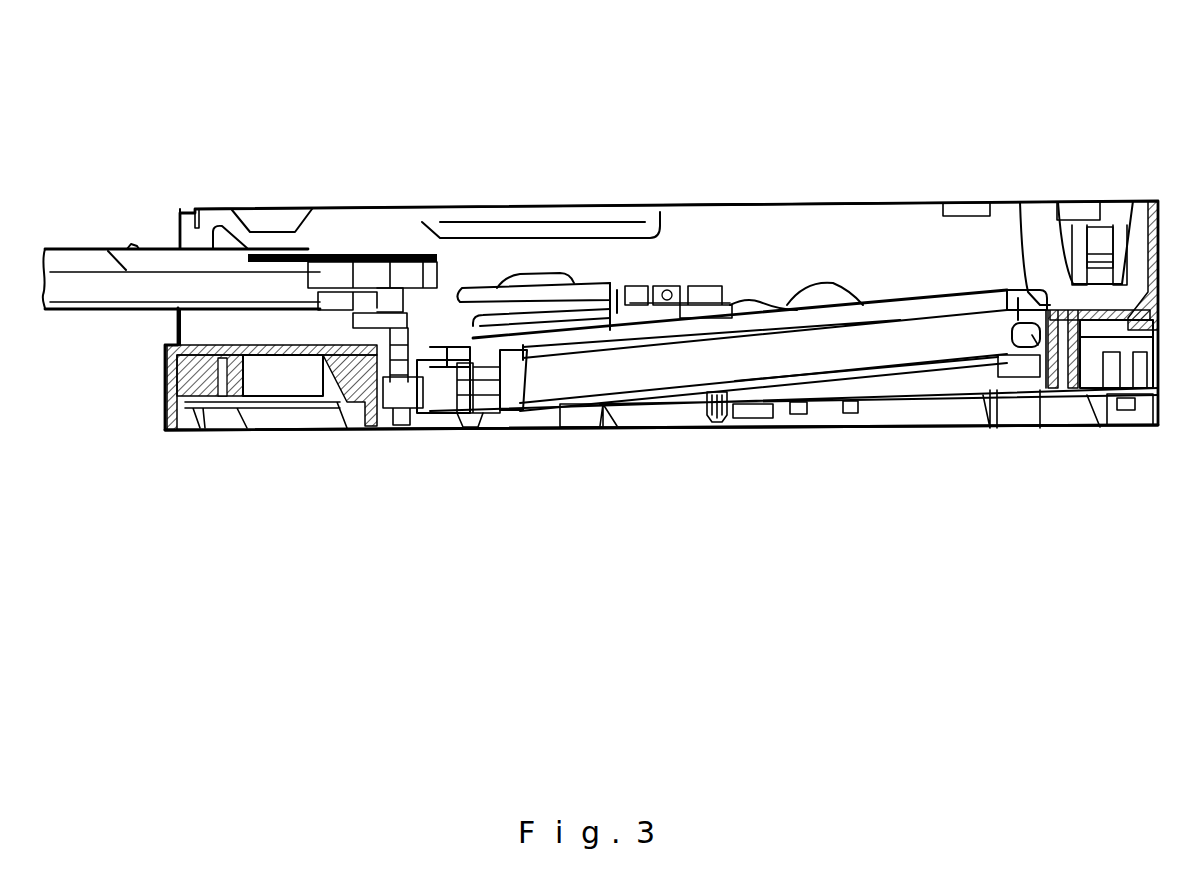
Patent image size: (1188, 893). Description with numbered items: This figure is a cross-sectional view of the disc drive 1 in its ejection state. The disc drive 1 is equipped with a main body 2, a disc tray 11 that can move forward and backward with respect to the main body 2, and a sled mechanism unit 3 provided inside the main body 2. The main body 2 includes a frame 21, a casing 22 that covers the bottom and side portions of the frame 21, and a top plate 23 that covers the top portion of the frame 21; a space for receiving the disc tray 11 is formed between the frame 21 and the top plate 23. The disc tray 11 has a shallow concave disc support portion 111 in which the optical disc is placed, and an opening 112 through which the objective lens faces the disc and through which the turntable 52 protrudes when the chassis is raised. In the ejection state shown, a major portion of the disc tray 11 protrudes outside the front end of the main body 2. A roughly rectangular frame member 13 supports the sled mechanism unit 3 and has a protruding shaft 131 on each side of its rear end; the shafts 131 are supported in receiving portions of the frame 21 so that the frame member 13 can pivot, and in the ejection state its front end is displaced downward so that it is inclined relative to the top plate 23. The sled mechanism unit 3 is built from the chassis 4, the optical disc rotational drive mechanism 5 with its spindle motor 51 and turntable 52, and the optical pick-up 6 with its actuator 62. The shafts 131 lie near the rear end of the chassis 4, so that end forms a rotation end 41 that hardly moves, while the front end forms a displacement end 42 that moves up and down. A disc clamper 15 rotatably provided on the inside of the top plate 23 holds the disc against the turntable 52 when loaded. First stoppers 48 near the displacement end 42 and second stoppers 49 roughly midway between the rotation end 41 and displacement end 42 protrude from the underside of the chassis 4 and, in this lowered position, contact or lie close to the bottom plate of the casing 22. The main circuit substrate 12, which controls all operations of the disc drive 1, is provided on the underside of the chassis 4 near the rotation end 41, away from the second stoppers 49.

The disc drive 1 is at (605, 124).
The main body 2 is at (352, 207).
The sled mechanism unit 3 is at (762, 283).
The chassis 4 is at (680, 393).
The optical disc rotational drive mechanism 5 is at (466, 288).
The optical pick-up 6 is at (684, 285).
The disc tray 11 is at (90, 311).
The main circuit substrate 12 is at (928, 430).
The frame member 13 is at (793, 353).
The disc clamper 15 is at (516, 238).
The frame 21 is at (338, 433).
The casing 22 is at (575, 432).
The top plate 23 is at (738, 210).
The rotation end 41 is at (987, 430).
The displacement end 42 is at (457, 432).
The first stoppers 48 is at (471, 433).
The second stoppers 49 is at (717, 424).
The spindle motor 51 is at (507, 432).
The turntable 52 is at (473, 283).
The actuator 62 is at (636, 287).
The disc support portion 111 is at (60, 249).
The opening 112 is at (134, 248).
The shaft 131 is at (1045, 430).